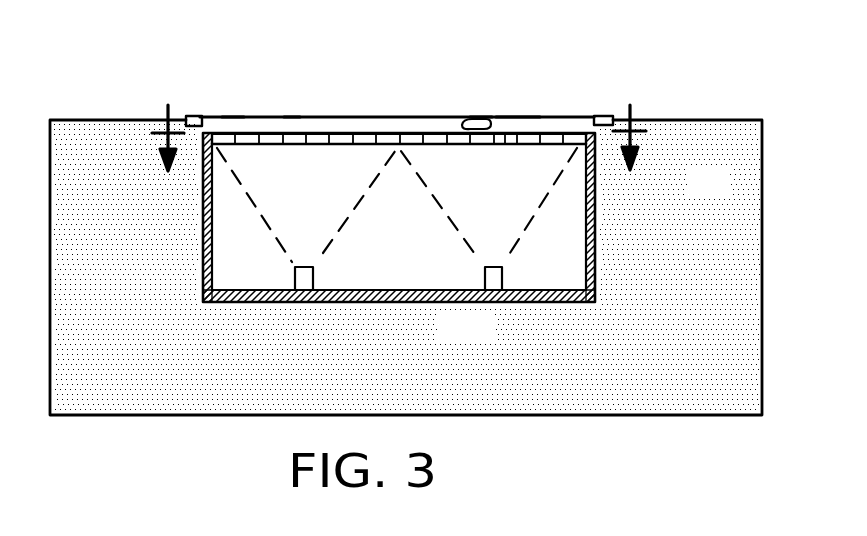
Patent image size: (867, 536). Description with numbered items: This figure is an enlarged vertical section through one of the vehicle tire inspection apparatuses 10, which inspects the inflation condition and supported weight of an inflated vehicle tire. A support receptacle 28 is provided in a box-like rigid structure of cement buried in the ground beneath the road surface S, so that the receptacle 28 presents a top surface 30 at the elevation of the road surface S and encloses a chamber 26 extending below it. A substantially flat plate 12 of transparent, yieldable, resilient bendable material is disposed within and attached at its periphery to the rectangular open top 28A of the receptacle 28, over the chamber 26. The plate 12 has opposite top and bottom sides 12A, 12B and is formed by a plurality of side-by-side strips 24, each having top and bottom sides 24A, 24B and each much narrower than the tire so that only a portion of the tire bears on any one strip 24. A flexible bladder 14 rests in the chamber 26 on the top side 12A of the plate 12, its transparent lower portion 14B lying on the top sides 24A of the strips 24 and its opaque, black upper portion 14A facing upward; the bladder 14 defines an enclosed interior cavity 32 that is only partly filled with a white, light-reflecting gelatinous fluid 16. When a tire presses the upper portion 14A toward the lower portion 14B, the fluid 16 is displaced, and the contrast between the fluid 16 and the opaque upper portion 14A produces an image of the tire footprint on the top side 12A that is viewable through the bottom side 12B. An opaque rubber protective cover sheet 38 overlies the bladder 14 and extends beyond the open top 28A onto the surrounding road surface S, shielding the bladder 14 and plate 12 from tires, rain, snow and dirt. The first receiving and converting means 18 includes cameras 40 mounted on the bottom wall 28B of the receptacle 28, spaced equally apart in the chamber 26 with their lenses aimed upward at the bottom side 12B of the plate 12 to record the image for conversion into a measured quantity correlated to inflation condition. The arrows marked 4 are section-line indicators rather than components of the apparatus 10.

The vehicle tire inspection apparatus 10 is at (622, 48).
The plate 12 is at (483, 145).
The top side of plate 12A is at (315, 133).
The bottom side of plate 12B is at (313, 130).
The flexible bladder 14 is at (258, 118).
The upper portion of bladder 14A is at (500, 116).
The lower portion of bladder 14B is at (293, 126).
The quantity of fluid 16 is at (480, 116).
The first receiving and converting means 18 is at (337, 257).
The strips 24 is at (387, 133).
The top side of strip 24A is at (575, 133).
The bottom side of strip 24B is at (501, 146).
The chamber 26 is at (399, 223).
The support receptacle 28 is at (596, 210).
The open top of receptacle 28A is at (601, 133).
The bottom wall of receptacle 28B is at (431, 303).
The top surface of receptacle 30 is at (210, 122).
The enclosed interior cavity 32 is at (462, 124).
The protective cover sheet 38 is at (232, 116).
The imaging devices 40 is at (485, 279).
The section line arrows 4 is at (398, 127).
The road surface S is at (150, 400).